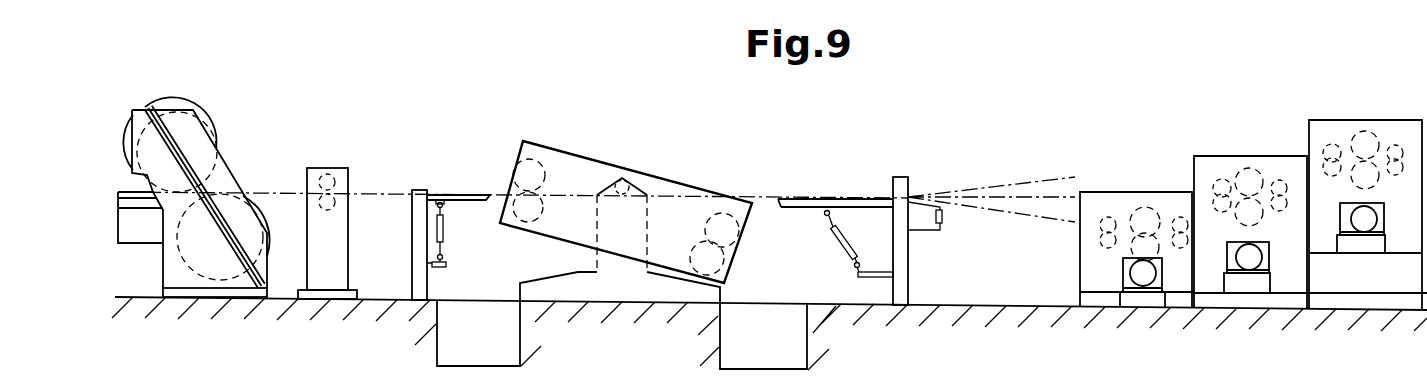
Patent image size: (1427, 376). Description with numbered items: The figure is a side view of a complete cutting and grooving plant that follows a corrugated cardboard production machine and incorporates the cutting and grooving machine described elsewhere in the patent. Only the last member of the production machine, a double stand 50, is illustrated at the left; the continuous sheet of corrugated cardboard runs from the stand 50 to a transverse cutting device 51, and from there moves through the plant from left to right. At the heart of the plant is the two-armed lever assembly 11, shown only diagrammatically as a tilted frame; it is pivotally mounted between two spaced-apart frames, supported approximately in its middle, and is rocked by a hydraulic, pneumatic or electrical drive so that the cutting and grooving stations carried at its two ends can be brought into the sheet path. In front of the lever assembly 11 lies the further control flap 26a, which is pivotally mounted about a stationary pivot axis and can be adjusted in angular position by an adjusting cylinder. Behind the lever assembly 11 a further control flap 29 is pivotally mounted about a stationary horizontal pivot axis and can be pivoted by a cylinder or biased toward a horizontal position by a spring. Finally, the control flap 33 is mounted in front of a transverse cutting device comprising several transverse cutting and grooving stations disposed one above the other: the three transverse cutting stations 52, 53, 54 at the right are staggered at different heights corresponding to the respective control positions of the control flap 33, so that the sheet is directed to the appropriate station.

The two-armed lever assembly 11 is at (588, 150).
The further control flap 26a is at (465, 203).
The further control flap 29 is at (800, 206).
The control flap 33 is at (967, 190).
The double stand 50 is at (230, 152).
The transverse cutting device 51 is at (328, 166).
The transverse cutting station 52 is at (1118, 190).
The transverse cutting station 53 is at (1228, 150).
The transverse cutting station 54 is at (1328, 115).